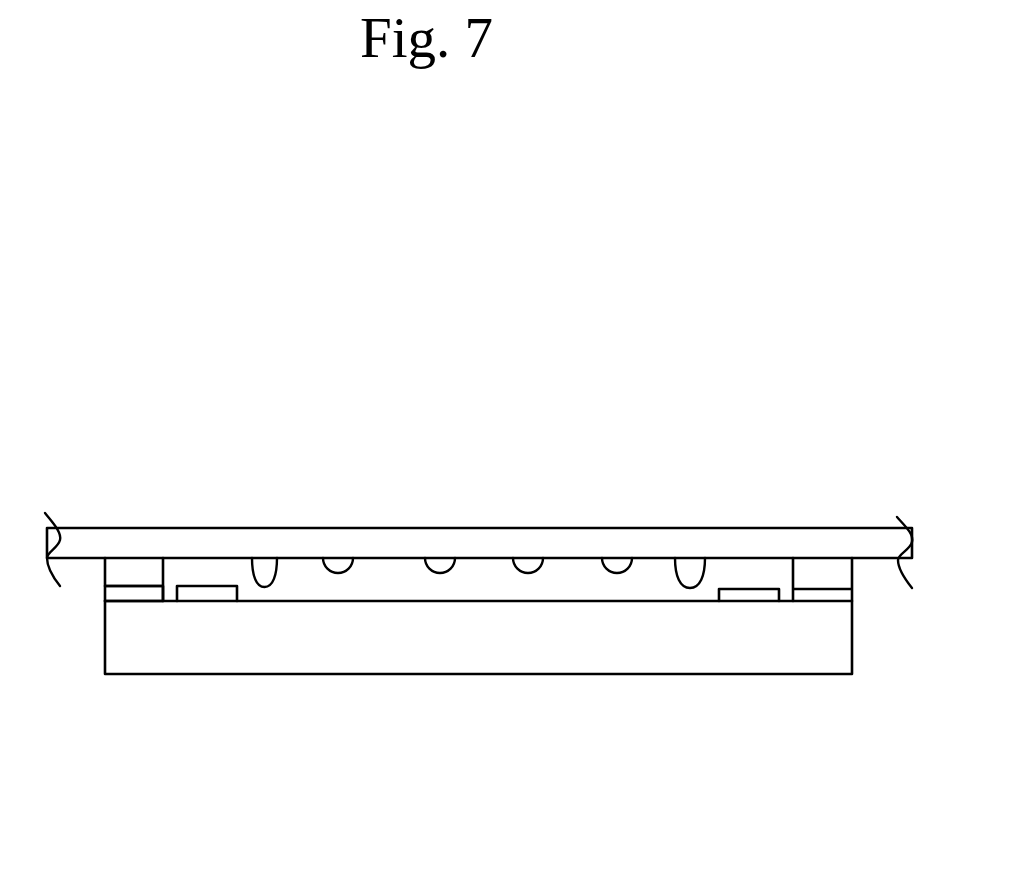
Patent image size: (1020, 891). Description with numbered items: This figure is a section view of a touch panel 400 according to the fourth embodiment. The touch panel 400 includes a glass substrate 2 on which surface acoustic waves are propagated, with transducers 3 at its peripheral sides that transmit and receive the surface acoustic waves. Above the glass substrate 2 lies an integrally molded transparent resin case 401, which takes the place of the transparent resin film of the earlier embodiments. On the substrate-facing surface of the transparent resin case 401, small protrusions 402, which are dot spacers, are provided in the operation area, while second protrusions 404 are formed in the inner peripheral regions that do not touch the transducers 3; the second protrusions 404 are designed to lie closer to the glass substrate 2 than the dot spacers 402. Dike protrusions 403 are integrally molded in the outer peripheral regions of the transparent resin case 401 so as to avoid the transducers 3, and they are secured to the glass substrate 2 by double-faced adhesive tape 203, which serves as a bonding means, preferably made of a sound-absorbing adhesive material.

The touch panel 400 is at (460, 352).
The transparent resin case 401 is at (530, 528).
The small protrusions 402 is at (617, 573).
The dike protrusions 403 is at (148, 572).
The second protrusions 404 is at (267, 572).
The double-faced adhesive tape 203 is at (133, 593).
The transducers 3 is at (223, 587).
The glass substrate 2 is at (513, 667).